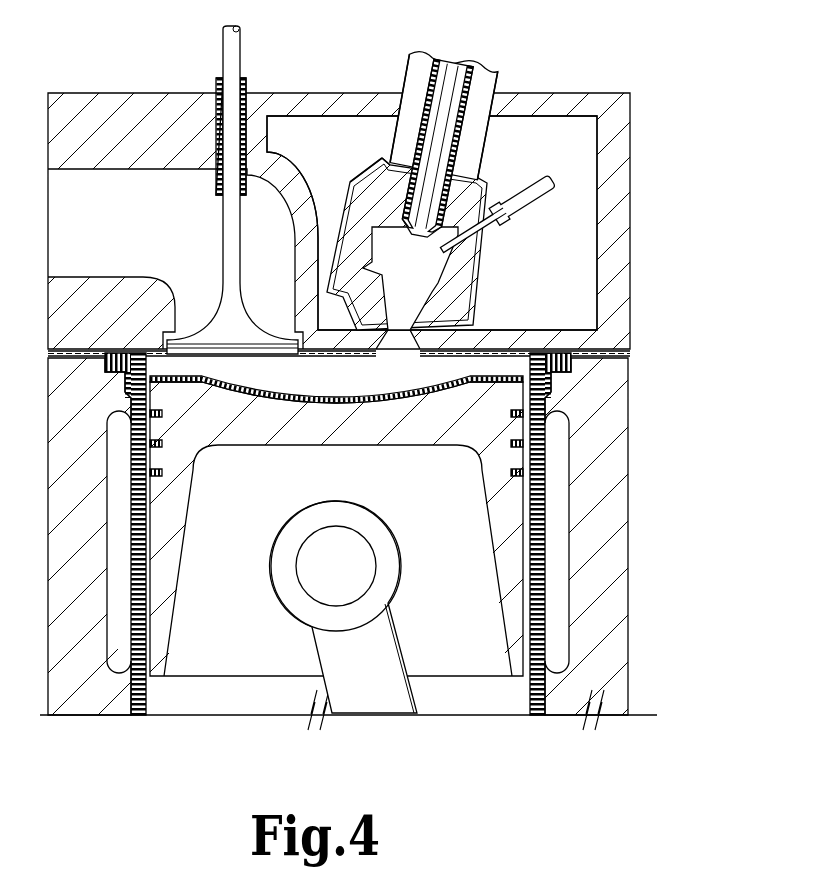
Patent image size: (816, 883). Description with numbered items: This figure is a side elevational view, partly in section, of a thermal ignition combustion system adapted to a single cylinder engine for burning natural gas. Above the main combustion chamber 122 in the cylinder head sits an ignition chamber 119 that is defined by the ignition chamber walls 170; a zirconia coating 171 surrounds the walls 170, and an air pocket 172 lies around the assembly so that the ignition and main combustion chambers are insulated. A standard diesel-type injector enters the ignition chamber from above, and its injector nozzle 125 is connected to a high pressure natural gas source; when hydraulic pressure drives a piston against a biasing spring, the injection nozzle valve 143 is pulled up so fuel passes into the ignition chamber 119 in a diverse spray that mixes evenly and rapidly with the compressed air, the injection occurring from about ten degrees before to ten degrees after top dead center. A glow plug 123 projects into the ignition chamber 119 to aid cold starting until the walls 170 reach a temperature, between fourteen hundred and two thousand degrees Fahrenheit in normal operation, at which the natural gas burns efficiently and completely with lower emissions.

The ignition chamber 119 is at (443, 277).
The main combustion chamber 122 is at (395, 377).
The glow plug 123 is at (547, 183).
The injector nozzle 125 is at (458, 163).
The injection nozzle valve 143 is at (452, 82).
The ignition chamber walls 170 is at (477, 258).
The zirconia coating 171 is at (382, 166).
The air pocket 172 is at (583, 242).